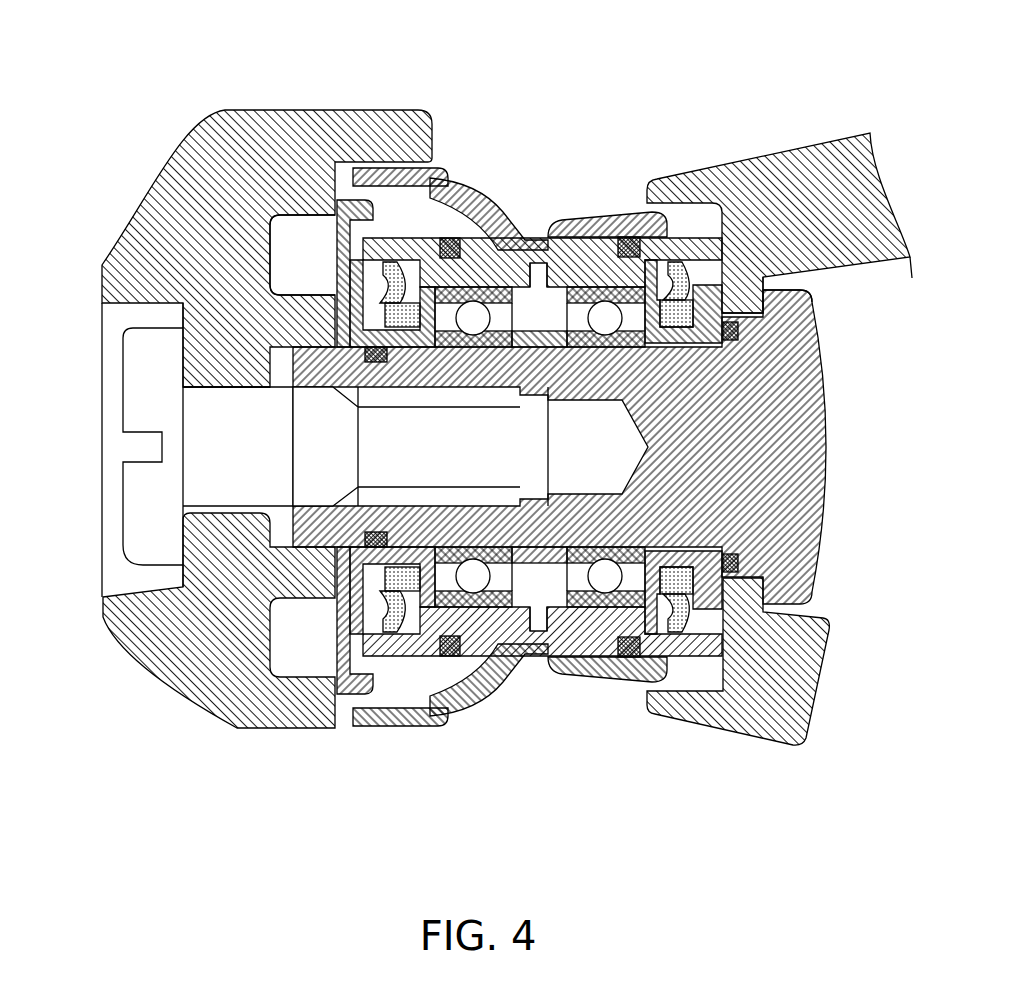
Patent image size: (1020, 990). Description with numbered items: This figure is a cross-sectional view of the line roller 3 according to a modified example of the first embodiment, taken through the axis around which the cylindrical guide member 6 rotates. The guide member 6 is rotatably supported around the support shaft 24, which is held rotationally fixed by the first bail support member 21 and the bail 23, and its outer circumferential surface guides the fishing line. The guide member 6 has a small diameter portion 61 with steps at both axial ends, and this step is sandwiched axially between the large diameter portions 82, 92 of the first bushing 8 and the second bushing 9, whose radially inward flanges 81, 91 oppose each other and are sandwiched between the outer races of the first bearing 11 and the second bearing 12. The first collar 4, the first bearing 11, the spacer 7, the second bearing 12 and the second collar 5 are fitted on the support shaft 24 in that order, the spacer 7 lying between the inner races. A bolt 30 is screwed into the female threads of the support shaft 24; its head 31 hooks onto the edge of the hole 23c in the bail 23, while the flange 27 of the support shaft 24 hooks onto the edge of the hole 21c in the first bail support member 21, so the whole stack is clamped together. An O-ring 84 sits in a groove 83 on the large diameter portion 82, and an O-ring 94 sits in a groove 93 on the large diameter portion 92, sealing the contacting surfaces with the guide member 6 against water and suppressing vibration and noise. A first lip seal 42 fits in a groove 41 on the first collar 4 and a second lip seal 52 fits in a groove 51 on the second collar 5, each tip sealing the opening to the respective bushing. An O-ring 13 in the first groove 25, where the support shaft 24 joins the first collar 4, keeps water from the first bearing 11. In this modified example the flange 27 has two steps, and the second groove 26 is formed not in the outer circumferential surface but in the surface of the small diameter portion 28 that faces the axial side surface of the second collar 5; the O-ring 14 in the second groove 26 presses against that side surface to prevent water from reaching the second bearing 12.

The line roller 3 is at (575, 92).
The first collar 4 is at (364, 200).
The second collar 5 is at (697, 196).
The guide member 6 is at (556, 215).
The spacer 7 is at (545, 600).
The first bushing 8 is at (542, 168).
The second bushing 9 is at (606, 188).
The first bearing 11 is at (505, 612).
The second bearing 12 is at (580, 612).
The O-ring 13 is at (405, 620).
The O-ring 14 is at (730, 575).
The first bail support member 21 is at (830, 148).
The hole 21c is at (770, 562).
The bail 23 is at (213, 135).
The hole 23c is at (236, 390).
The support shaft 24 is at (712, 437).
The first groove 25 is at (338, 292).
The second groove 26 is at (735, 318).
The flange 27 is at (790, 325).
The small diameter portion 28 is at (745, 333).
The bolt 30 is at (207, 473).
The head 31 is at (152, 412).
The groove 41 is at (412, 240).
The first lip seal 42 is at (392, 645).
The groove 51 is at (680, 312).
The second lip seal 52 is at (688, 622).
The small diameter portion 61 is at (553, 335).
The flange 81 is at (522, 272).
The large diameter portion 82 is at (447, 195).
The groove 83 is at (475, 235).
The O-ring 84 is at (458, 668).
The flange 91 is at (556, 262).
The large diameter portion 92 is at (670, 265).
The groove 93 is at (627, 232).
The O-ring 94 is at (628, 662).